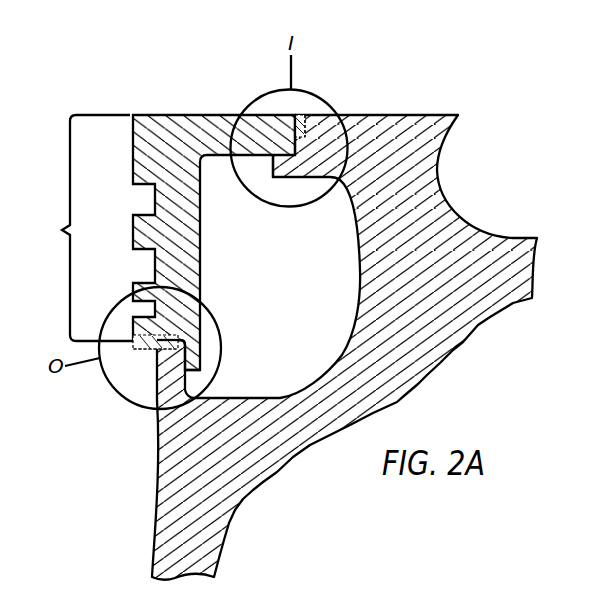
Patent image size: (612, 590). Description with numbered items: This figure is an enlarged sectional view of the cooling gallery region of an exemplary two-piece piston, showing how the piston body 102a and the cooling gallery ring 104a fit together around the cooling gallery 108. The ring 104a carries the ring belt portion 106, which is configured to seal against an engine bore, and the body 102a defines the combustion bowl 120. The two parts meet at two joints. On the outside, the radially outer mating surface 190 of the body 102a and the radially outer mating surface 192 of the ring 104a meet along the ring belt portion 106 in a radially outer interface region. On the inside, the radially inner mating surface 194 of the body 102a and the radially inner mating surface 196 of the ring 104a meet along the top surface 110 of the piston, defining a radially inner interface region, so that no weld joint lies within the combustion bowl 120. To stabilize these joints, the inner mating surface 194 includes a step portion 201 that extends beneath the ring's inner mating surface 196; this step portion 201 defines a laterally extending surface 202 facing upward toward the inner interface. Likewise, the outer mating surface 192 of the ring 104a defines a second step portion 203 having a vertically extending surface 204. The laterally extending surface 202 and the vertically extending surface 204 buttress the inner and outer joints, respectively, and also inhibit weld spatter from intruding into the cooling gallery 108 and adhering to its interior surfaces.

The piston body 102a is at (303, 438).
The top surface 110 is at (422, 113).
The cooling gallery 108 is at (296, 298).
The cooling gallery ring 104a is at (158, 137).
The ring belt portion 106 is at (78, 228).
The radially inner mating surface of the ring 196 is at (286, 130).
The radially inner mating surface of the body 194 is at (307, 137).
The radially outer mating surface of the ring 192 is at (168, 334).
The radially outer mating surface of the body 190 is at (163, 343).
The vertically extending surface 204 is at (158, 352).
The laterally extending surface 202 is at (281, 166).
The step portion 201 is at (291, 166).
The second step portion 203 is at (195, 362).
The combustion bowl 120 is at (499, 163).